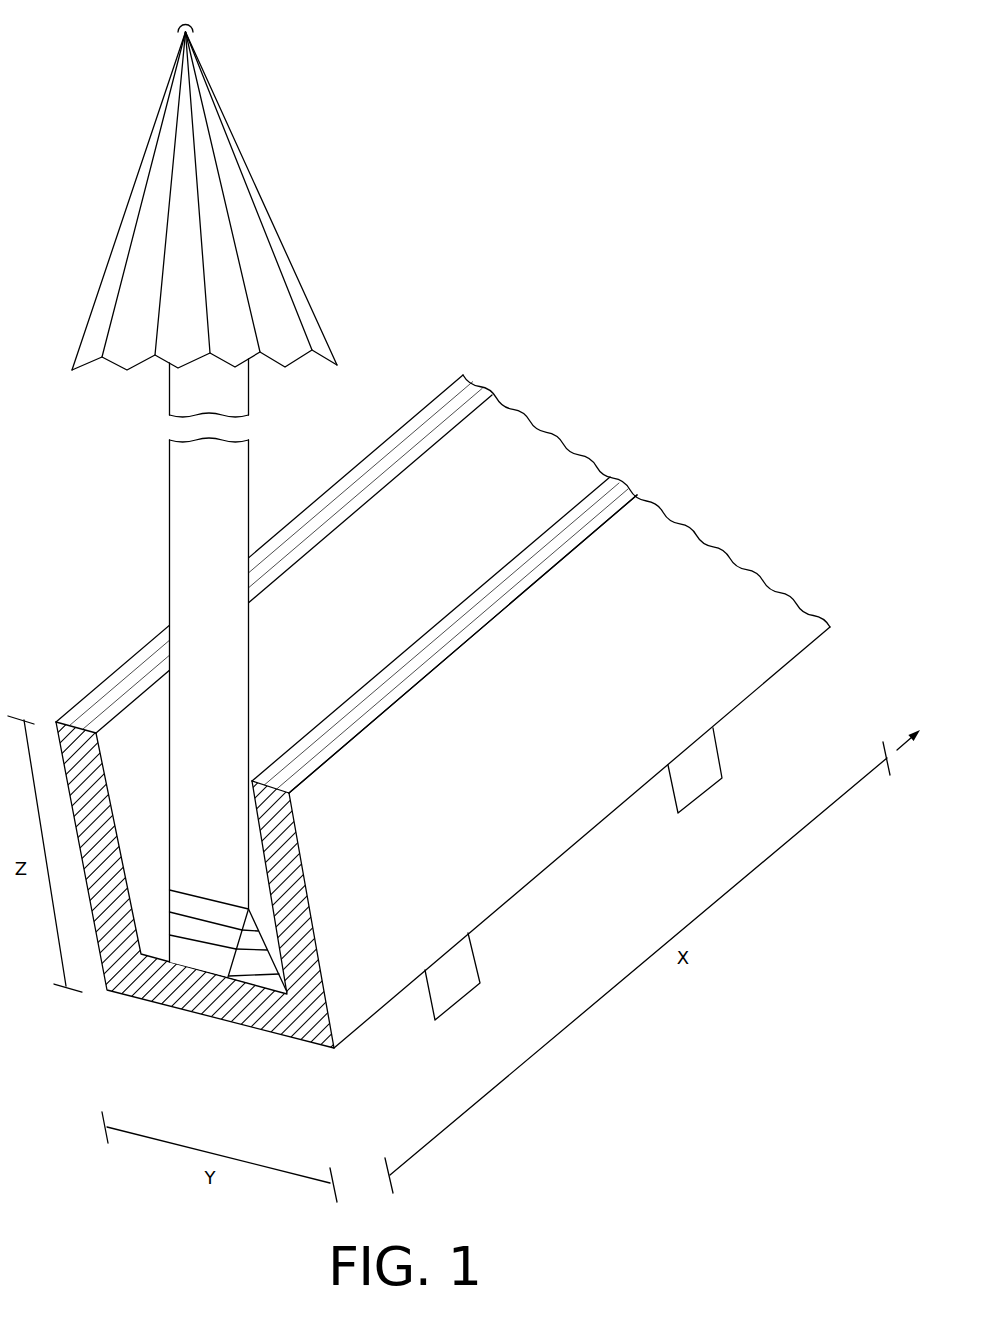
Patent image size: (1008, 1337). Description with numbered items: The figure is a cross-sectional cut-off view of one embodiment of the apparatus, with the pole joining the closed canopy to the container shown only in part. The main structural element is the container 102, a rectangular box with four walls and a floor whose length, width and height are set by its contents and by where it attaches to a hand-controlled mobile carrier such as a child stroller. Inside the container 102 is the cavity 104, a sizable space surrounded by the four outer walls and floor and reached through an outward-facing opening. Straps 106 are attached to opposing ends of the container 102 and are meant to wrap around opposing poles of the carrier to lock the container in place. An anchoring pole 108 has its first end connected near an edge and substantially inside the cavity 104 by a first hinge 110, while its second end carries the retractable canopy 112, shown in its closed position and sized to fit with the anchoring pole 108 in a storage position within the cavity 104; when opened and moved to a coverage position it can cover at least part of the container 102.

The container 102 is at (750, 695).
The cavity 104 is at (540, 450).
The straps 106 is at (700, 795).
The anchoring pole 108 is at (169, 498).
The first hinge 110 is at (266, 962).
The retractable canopy 112 is at (300, 262).